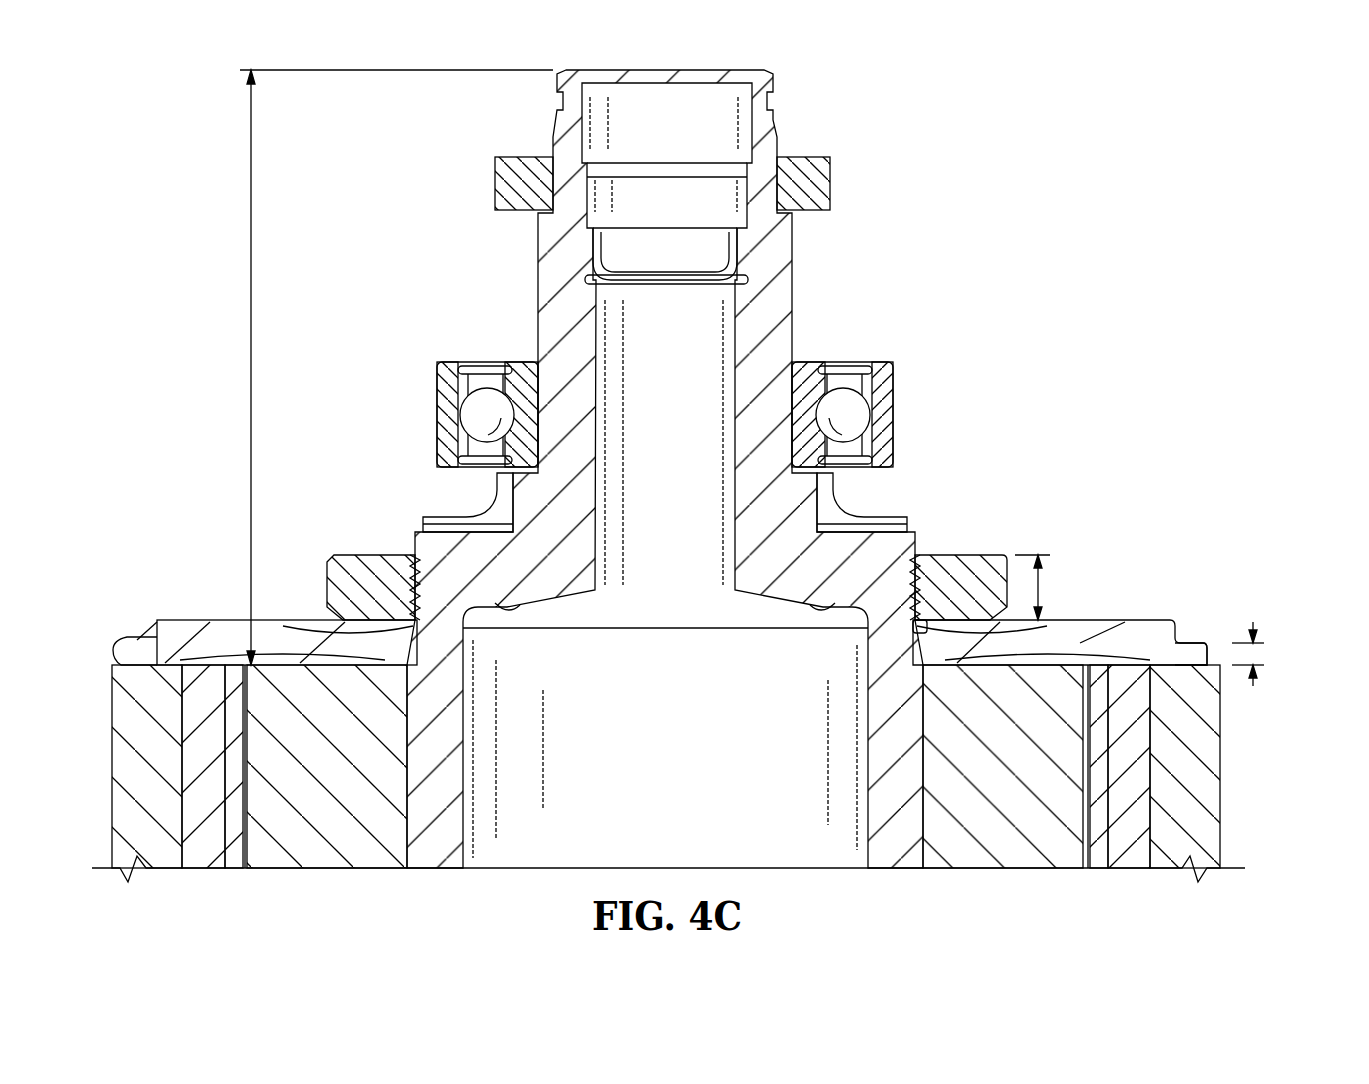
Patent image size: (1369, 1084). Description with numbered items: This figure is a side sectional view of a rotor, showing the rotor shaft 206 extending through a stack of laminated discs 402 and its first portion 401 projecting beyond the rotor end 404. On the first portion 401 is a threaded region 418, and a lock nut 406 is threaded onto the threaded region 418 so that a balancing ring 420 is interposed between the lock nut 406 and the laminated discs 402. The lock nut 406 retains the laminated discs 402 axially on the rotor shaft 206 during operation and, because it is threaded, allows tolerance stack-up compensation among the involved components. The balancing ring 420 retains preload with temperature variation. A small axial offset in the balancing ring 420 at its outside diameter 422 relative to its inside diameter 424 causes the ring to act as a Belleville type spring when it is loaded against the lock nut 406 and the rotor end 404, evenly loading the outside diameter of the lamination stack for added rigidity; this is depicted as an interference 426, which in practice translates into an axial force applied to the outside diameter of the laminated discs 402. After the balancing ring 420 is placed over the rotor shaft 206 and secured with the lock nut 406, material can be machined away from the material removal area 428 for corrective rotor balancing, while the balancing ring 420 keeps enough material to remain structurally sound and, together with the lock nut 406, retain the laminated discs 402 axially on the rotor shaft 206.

The rotor shaft 206 is at (803, 292).
The first portion 401 is at (250, 368).
The laminated discs 402 is at (1212, 804).
The rotor end 404 is at (113, 640).
The lock nut 406 is at (962, 556).
The threaded region 418 is at (1045, 592).
The balancing ring 420 is at (1150, 620).
The outside diameter 422 is at (1197, 643).
The inside diameter 424 is at (913, 626).
The interference 426 is at (1262, 634).
The material removal area 428 is at (210, 630).